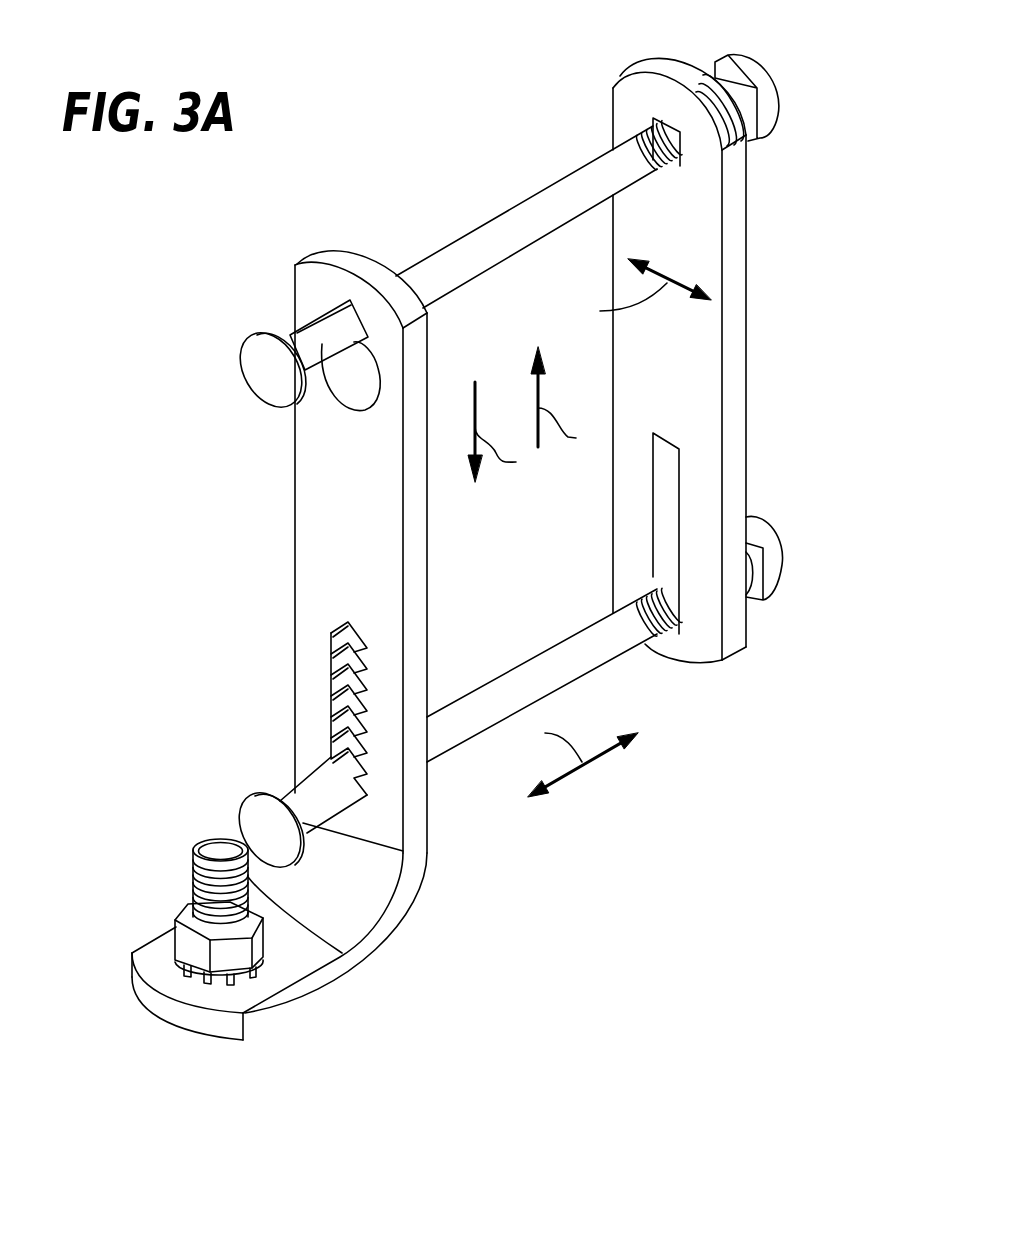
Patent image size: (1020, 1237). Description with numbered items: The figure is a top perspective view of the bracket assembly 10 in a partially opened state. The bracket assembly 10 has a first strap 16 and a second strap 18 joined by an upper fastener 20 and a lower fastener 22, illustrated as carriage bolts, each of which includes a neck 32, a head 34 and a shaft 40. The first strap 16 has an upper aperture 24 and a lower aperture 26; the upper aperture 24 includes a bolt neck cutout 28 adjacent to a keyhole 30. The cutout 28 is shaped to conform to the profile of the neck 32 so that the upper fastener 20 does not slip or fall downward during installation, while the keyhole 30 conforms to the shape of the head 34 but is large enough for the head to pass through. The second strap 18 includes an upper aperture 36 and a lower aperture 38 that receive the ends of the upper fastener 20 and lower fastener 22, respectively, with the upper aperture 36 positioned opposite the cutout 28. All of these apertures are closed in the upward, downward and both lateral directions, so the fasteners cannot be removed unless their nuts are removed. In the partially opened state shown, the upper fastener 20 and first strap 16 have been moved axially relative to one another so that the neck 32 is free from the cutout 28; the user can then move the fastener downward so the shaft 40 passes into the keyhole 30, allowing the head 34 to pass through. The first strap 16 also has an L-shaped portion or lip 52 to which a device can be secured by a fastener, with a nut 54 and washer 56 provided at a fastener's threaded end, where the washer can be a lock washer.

The bracket assembly 10 is at (327, 184).
The first strap 16 is at (298, 548).
The second strap 18 is at (745, 352).
The upper fastener 20 is at (545, 186).
The lower fastener 22 is at (552, 645).
The upper aperture 24 is at (318, 293).
The lower aperture 26 is at (318, 687).
The bolt neck cutout 28 is at (384, 327).
The keyhole 30 is at (357, 399).
The neck 32 is at (290, 340).
The head 34 is at (262, 357).
The upper aperture 36 is at (641, 110).
The lower aperture 38 is at (641, 532).
The shaft 40 is at (576, 165).
The L-shaped portion or lip 52 is at (172, 1013).
The nut 54 is at (190, 940).
The washer 56 is at (745, 68).